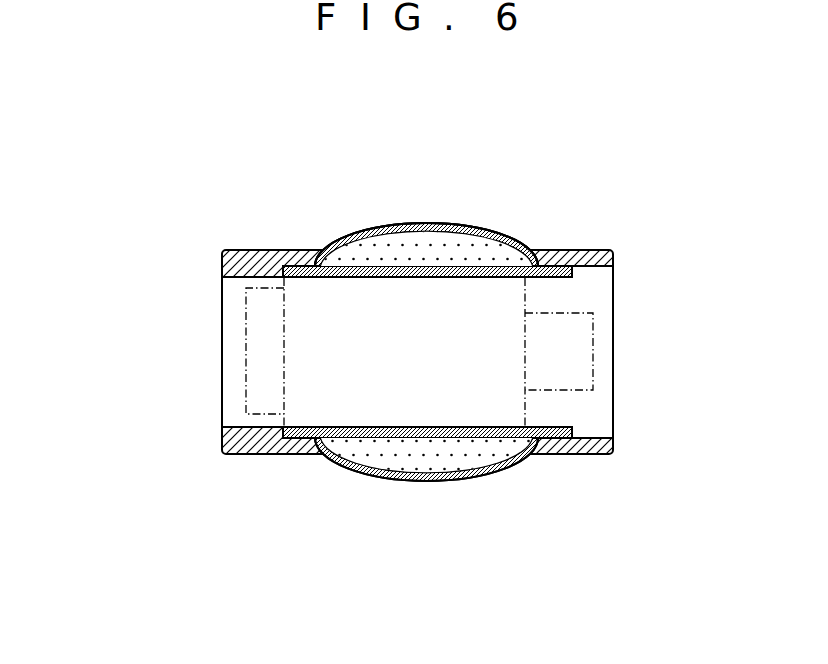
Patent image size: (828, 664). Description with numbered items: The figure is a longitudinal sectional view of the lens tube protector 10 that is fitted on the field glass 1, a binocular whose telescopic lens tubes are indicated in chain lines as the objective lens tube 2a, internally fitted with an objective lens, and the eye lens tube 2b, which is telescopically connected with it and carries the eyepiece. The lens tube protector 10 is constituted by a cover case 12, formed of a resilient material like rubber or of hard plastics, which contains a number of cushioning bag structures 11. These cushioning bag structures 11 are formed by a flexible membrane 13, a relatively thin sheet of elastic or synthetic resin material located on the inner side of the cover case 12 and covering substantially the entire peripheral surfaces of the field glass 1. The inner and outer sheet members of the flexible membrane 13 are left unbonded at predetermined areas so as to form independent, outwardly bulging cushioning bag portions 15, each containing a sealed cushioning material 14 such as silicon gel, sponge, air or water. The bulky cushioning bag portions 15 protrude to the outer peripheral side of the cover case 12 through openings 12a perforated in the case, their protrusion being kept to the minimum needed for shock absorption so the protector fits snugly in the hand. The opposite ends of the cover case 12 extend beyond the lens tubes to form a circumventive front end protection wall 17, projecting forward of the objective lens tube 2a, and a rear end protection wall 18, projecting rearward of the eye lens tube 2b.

The field glass 1 is at (378, 407).
The objective lens tube 2a is at (245, 340).
The eye lens tube 2b is at (593, 360).
The lens tube protector 10 is at (574, 243).
The cushioning bag structure 11 is at (366, 225).
The cover case 12 is at (298, 460).
The opening 12a is at (523, 250).
The flexible membrane 13 is at (445, 275).
The cushioning material 14 is at (400, 238).
The cushioning bag portion 15 is at (480, 227).
The front end protection wall 17 is at (253, 441).
The rear end protection wall 18 is at (598, 455).